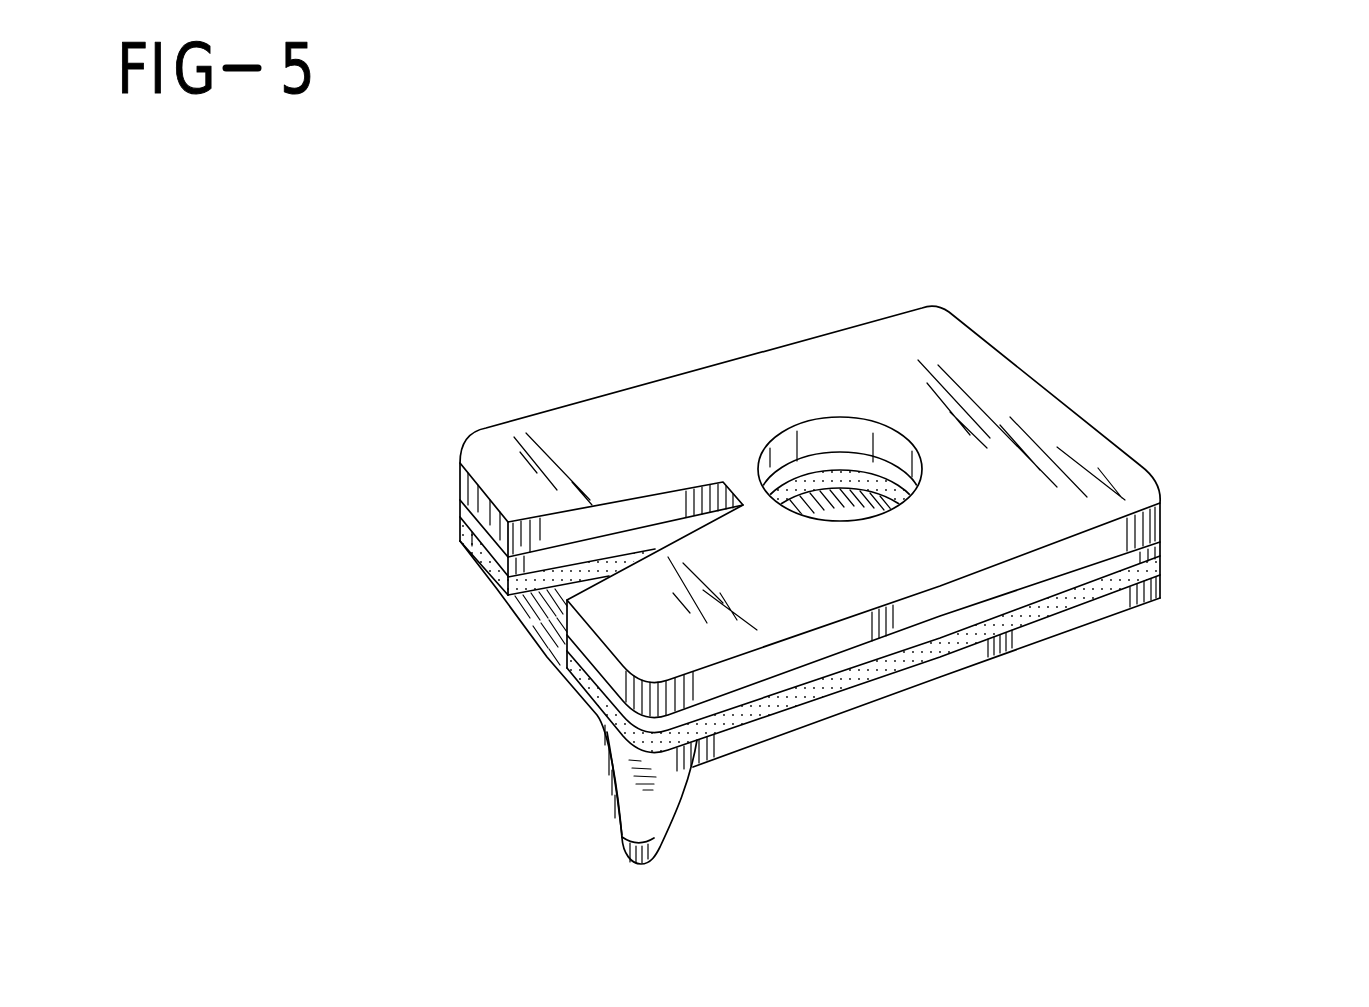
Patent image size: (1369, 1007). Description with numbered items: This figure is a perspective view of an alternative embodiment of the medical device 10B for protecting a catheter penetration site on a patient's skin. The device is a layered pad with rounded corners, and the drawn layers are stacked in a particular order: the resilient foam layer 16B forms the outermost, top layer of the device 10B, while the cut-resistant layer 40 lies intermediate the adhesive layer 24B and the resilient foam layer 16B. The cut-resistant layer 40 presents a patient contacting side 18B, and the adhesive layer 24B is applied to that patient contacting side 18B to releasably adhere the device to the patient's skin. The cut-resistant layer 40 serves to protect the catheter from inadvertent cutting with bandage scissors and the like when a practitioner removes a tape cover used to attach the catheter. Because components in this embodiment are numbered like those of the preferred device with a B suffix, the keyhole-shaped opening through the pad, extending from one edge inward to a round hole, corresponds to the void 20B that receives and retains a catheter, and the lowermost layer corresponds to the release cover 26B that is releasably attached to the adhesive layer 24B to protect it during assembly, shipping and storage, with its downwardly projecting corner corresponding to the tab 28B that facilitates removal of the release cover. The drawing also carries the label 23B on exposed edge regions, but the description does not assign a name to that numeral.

The medical device 10B is at (522, 311).
The resilient foam layer 16B is at (1047, 447).
The patient contacting side 18B is at (1033, 612).
The void 20B is at (646, 518).
The exposed edge surface 23B is at (841, 500).
The adhesive layer 24B is at (1155, 571).
The release cover 26B is at (1155, 598).
The tab 28B is at (640, 817).
The cut-resistant layer 40 is at (1150, 556).